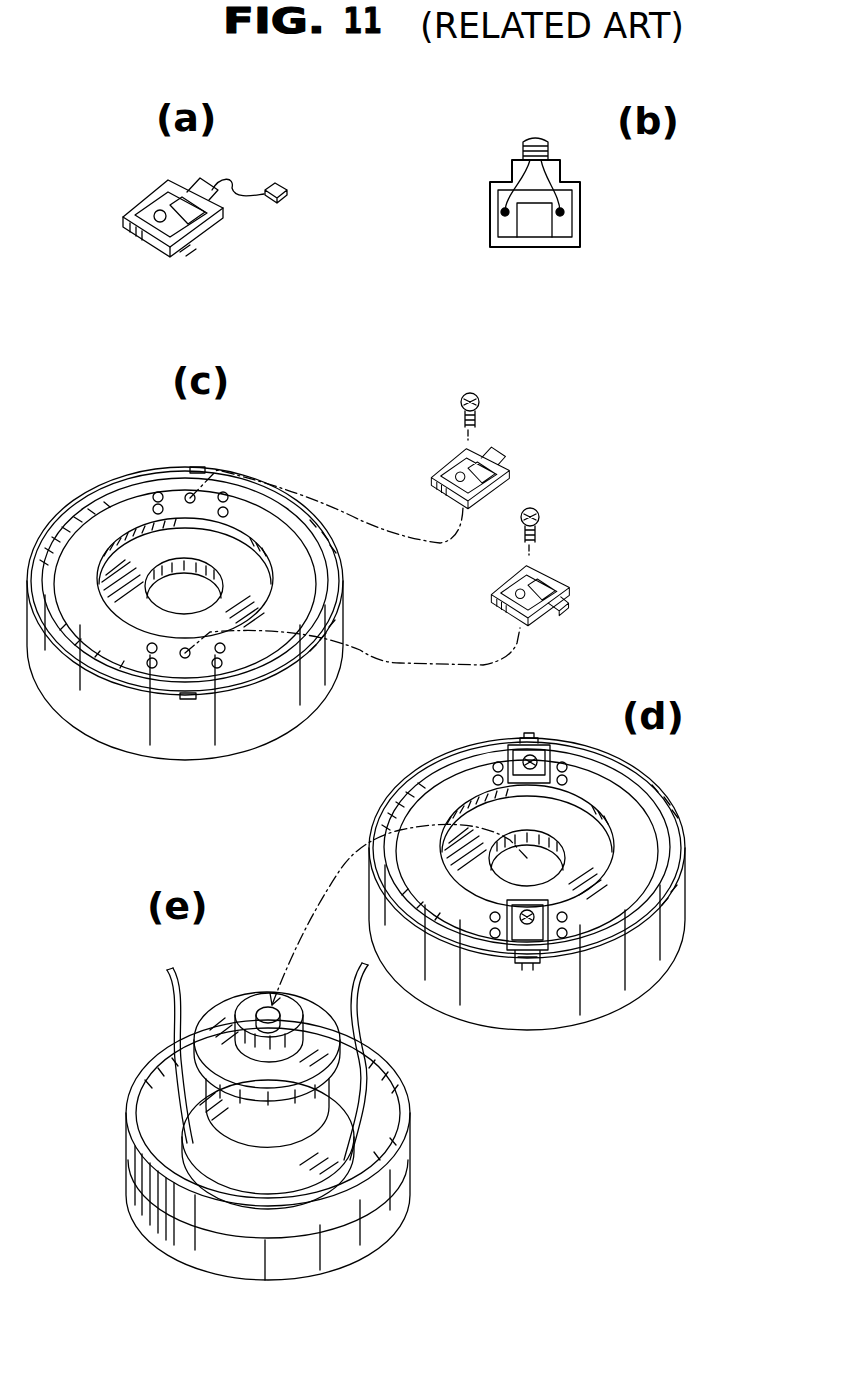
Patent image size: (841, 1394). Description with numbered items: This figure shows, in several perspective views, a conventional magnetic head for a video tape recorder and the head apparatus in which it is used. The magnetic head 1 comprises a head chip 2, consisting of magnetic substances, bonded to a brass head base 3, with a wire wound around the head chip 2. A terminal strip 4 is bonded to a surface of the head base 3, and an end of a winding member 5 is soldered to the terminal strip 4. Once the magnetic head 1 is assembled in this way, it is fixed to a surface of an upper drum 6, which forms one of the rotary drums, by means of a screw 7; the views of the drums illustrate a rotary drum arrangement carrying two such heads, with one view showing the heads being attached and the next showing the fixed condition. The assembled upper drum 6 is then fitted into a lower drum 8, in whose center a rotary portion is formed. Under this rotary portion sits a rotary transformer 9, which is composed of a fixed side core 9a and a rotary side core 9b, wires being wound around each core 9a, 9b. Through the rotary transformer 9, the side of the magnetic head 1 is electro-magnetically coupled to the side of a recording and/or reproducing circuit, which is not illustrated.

The magnetic head 1 is at (304, 128).
The head chip 2 is at (285, 197).
The head base 3 is at (207, 230).
The terminal strip 4 is at (170, 190).
The winding member 5 is at (545, 172).
The upper drum 6 is at (80, 706).
The screw 7 is at (480, 402).
The lower drum 8 is at (337, 1222).
The rotary transformer 9 is at (343, 1086).
The fixed side core 9a is at (337, 1155).
The rotary side core 9b is at (337, 1118).